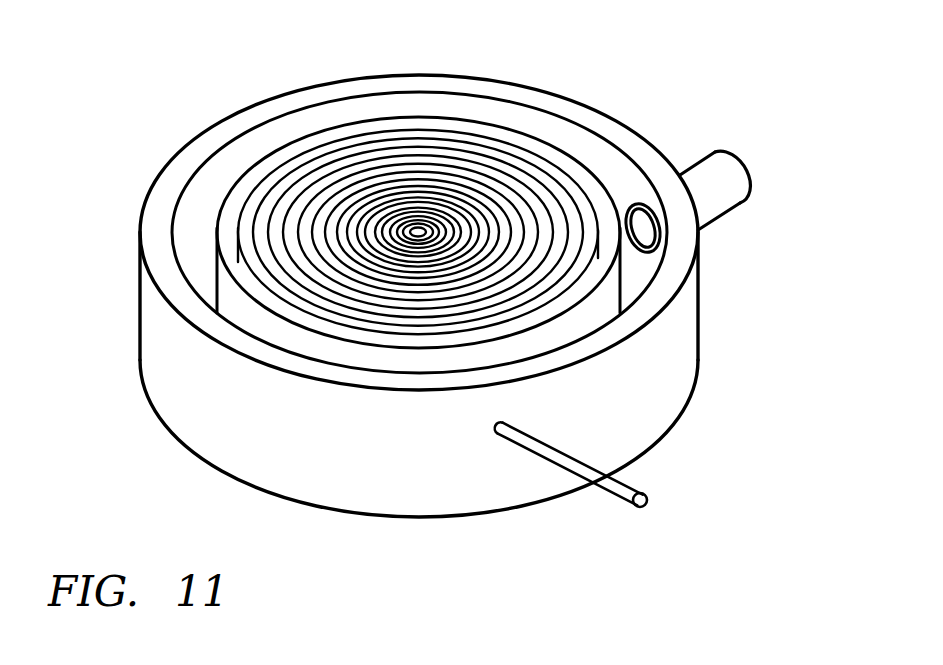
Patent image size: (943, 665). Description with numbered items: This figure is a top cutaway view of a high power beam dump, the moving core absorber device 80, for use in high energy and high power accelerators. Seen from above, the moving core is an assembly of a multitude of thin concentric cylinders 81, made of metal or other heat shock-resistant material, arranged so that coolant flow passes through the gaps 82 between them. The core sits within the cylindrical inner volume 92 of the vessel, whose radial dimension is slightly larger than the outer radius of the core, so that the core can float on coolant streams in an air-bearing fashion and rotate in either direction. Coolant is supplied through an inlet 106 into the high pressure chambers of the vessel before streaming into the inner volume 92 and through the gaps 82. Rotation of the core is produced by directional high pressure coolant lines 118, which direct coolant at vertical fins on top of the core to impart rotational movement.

The moving core absorber device 80 is at (700, 94).
The concentric cylinders 81 is at (394, 158).
The gaps 82 is at (498, 168).
The inner volume 92 is at (570, 142).
The inlet 106 is at (725, 181).
The directional high pressure coolant lines 118 is at (633, 490).